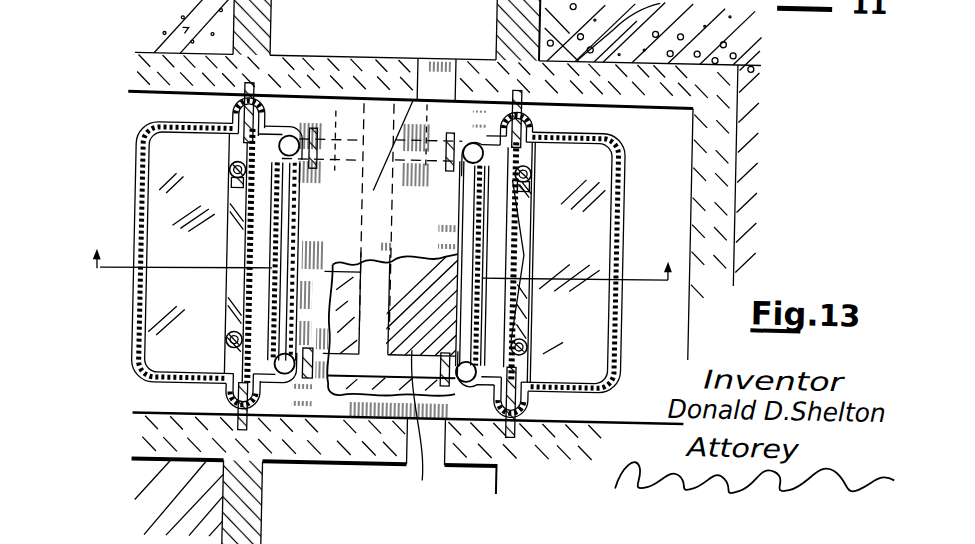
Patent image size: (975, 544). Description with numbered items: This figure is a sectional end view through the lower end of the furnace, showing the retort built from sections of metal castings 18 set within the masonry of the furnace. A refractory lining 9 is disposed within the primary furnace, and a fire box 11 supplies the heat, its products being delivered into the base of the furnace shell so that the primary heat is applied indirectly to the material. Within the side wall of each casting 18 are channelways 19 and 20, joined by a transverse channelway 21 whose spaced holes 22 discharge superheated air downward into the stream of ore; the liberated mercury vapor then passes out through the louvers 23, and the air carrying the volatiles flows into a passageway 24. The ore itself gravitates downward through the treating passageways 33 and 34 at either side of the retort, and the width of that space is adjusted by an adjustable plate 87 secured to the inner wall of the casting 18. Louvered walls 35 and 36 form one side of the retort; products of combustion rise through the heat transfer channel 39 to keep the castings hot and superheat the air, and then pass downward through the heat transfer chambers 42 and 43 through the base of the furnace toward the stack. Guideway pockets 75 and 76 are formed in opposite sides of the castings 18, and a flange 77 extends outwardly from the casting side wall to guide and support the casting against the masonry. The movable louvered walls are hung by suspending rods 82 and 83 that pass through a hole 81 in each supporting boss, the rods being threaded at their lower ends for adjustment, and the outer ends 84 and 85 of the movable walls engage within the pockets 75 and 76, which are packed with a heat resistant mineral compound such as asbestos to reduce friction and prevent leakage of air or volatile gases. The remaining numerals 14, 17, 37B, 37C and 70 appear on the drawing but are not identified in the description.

The refractory lining 9 is at (632, 102).
The fire box 11 is at (458, 36).
The section line 14 is at (384, 280).
The center seal core 17 is at (362, 351).
The metal castings 18 is at (142, 220).
The channelway 19 is at (299, 352).
The channelway 20 is at (310, 134).
The transverse channelway 21 is at (282, 212).
The spaced holes 22 is at (274, 200).
The louvers 23 is at (328, 256).
The passageway 24 is at (163, 308).
The treating passageway 33 is at (495, 251).
The treating passageway 34 is at (268, 225).
The louvered wall 35 is at (246, 291).
The louvered wall 36 is at (512, 236).
The wall section 37B is at (405, 500).
The track slot 37C is at (422, 121).
The heat transfer channel 39 is at (419, 126).
The heat transfer chamber 42 is at (666, 150).
The heat transfer chamber 43 is at (120, 358).
The lower pin end 70 is at (516, 434).
The guideway pocket 75 is at (230, 398).
The guideway pocket 76 is at (224, 121).
The flange 77 is at (250, 100).
The hole 81 is at (603, 394).
The suspending rod 82 is at (228, 176).
The suspending rod 83 is at (230, 342).
The outer end of movable louvered wall 84 is at (264, 128).
The outer end of movable louvered wall 85 is at (242, 428).
The adjustable plate 87 is at (232, 144).